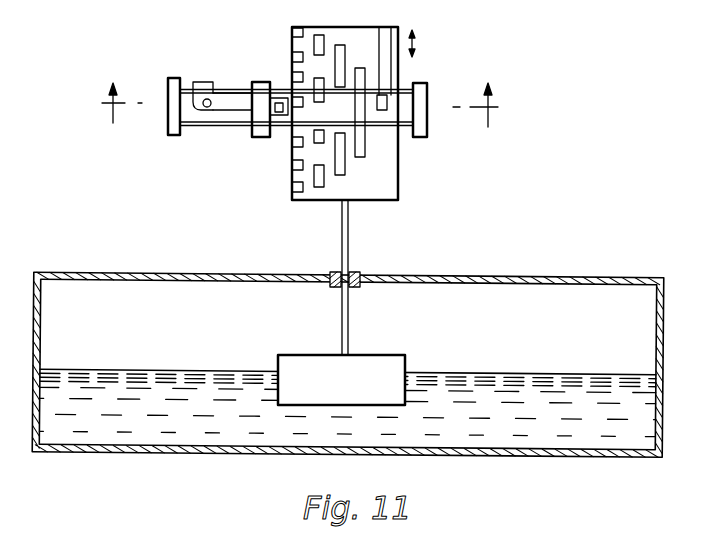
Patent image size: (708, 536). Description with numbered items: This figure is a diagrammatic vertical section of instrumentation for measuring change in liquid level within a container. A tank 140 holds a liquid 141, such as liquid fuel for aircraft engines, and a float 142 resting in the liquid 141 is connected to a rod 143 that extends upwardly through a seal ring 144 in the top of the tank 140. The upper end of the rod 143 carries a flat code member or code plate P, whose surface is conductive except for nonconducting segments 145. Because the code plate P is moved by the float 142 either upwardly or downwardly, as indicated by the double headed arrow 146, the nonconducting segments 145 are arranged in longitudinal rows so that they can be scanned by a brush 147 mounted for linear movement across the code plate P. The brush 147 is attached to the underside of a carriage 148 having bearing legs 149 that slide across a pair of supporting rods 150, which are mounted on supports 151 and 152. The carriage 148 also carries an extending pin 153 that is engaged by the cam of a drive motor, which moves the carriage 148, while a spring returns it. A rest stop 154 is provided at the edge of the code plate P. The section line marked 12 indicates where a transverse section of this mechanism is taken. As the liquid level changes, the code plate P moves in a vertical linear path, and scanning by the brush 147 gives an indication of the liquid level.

The tank 140 is at (525, 275).
The liquid 141 is at (512, 371).
The float 142 is at (292, 355).
The rod 143 is at (348, 236).
The seal ring 144 is at (340, 272).
The nonconducting segments 145 is at (294, 188).
The double headed arrow 146 is at (418, 43).
The brush 147 is at (282, 98).
The carriage 148 is at (232, 104).
The bearing legs 149 is at (207, 82).
The supporting rods 150 is at (407, 89).
The support 151 is at (170, 78).
The support 152 is at (422, 84).
The extending pin 153 is at (206, 108).
The rest stop 154 is at (272, 117).
The code plate P is at (402, 190).
The section line 12- 12 is at (300, 123).